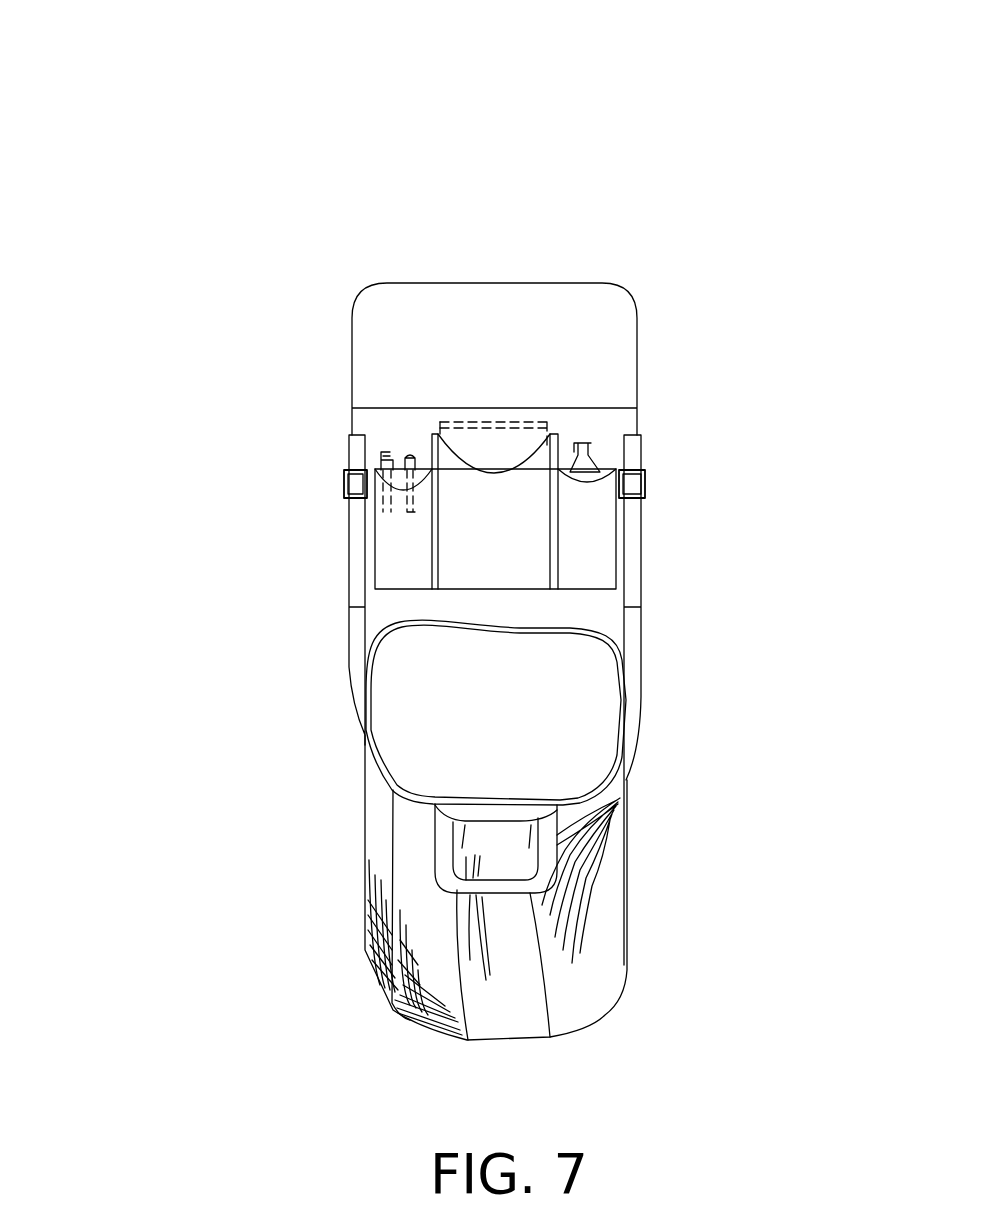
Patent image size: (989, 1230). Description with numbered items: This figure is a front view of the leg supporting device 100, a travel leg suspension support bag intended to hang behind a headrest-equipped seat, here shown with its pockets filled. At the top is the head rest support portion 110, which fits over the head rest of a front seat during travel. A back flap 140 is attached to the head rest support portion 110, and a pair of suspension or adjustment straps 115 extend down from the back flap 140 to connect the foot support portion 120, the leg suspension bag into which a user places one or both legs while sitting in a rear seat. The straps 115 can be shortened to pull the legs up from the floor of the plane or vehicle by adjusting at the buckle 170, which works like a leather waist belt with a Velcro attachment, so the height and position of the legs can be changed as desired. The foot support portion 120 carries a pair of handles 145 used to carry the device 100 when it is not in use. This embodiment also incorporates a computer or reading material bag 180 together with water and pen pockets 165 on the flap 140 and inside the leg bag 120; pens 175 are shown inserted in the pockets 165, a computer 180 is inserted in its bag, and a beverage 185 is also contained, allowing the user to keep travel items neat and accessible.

The leg supporting device 100 is at (198, 92).
The head rest support portion 110 is at (553, 312).
The adjustment straps 115 is at (355, 667).
The foot support portion 120 is at (377, 842).
The back flap portion 140 is at (588, 610).
The handles 145 is at (447, 870).
The pockets 165 is at (387, 570).
The buckle 170 is at (343, 473).
The pens 175 is at (410, 455).
The computer 180 is at (488, 443).
The beverage 185 is at (592, 457).